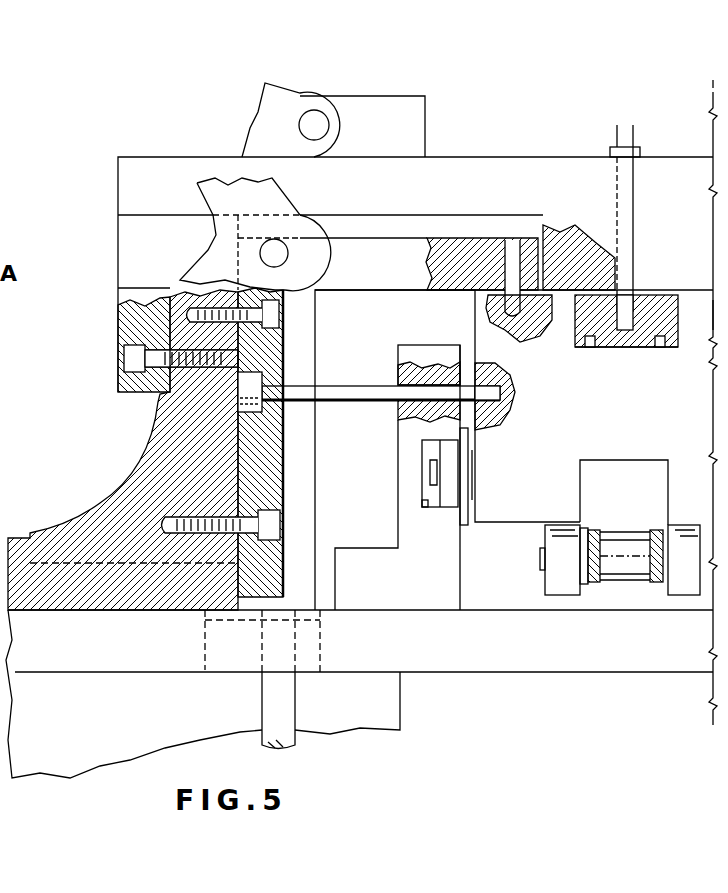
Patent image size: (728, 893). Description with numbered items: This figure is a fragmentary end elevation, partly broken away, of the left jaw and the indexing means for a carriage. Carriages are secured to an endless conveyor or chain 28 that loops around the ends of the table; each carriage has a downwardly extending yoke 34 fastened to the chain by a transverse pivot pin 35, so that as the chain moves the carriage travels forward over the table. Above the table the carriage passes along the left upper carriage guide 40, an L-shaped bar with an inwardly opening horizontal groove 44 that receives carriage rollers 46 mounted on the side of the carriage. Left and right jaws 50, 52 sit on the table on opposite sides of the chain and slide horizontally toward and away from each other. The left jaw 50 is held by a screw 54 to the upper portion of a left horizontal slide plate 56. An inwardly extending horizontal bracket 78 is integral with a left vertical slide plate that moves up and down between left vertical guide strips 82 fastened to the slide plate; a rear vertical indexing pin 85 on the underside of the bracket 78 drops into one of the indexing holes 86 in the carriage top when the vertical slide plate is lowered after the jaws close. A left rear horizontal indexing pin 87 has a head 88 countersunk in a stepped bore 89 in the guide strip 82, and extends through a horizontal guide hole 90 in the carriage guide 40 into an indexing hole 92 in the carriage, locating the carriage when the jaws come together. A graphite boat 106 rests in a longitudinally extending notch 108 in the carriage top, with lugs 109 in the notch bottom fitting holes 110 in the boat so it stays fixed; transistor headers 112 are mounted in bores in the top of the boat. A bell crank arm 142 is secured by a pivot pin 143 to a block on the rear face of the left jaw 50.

The endless conveyor or chain 28 is at (620, 534).
The yoke 34 is at (560, 543).
The transverse pivot pin 35 is at (540, 559).
The left upper carriage guide 40 is at (408, 345).
The horizontal groove 44 is at (422, 503).
The carriage rollers 46 is at (450, 453).
The left jaw 50 is at (496, 161).
The right jaw 52 is at (678, 161).
The screw 54 is at (130, 358).
The left horizontal slide plate 56 is at (143, 466).
The horizontal bracket 78 is at (368, 288).
The left vertical guide strips 82 is at (283, 498).
The rear vertical indexing pin 85 is at (505, 268).
The indexing holes 86 is at (500, 324).
The left rear horizontal indexing pin 87 is at (356, 385).
The head 88 is at (264, 389).
The stepped bore 89 is at (284, 430).
The horizontal guide hole 90 is at (412, 387).
The indexing hole 92 is at (520, 394).
The graphite boat 106 is at (661, 298).
The longitudinally extending notch 108 is at (677, 313).
The lugs 109 is at (660, 350).
The holes 110 is at (580, 342).
The transistor headers 112 is at (642, 297).
The bell crank arm 142 is at (273, 196).
The pivot pin 143 is at (285, 253).